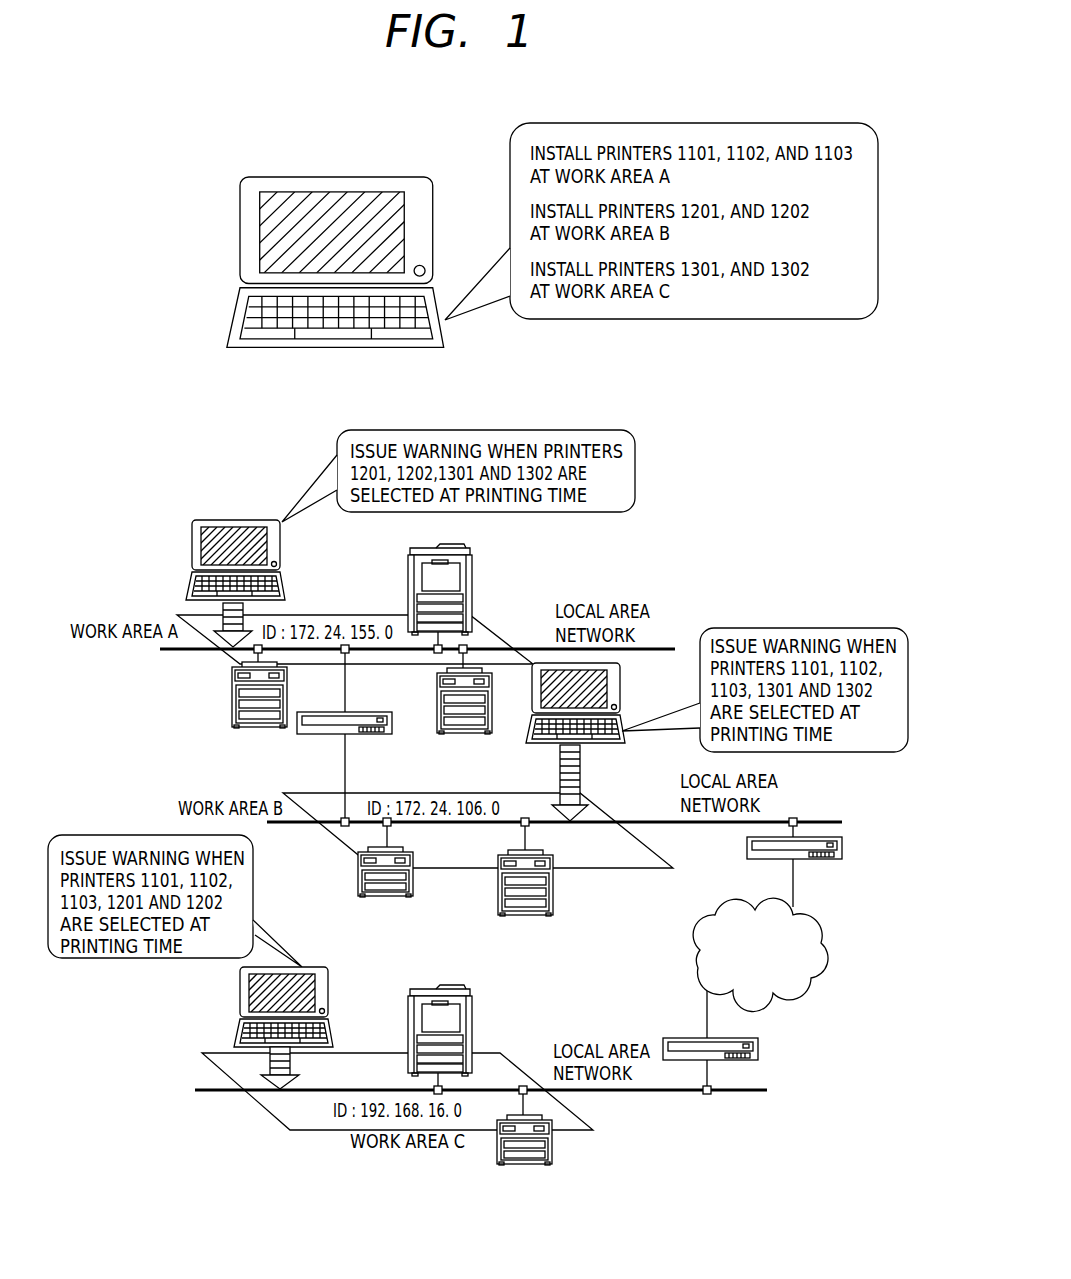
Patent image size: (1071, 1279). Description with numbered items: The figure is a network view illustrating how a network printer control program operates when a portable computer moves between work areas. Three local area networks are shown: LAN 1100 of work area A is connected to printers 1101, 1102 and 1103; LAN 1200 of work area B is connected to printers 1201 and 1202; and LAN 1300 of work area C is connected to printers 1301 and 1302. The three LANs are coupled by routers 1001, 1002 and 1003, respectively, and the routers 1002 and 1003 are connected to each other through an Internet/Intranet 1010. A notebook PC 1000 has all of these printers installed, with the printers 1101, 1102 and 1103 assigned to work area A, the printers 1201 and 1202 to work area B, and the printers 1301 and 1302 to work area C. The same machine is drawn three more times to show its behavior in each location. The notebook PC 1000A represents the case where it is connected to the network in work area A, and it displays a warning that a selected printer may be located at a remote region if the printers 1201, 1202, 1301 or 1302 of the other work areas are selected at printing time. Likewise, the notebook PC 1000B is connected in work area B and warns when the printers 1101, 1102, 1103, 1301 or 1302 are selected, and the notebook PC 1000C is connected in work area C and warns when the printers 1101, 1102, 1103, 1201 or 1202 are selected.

The notebook PC 1000 is at (350, 177).
The notebook PC 1000A is at (240, 520).
The notebook PC 1000B is at (652, 687).
The notebook PC 1000C is at (333, 970).
The router 1001 is at (325, 712).
The router 1002 is at (842, 848).
The router 1003 is at (668, 1036).
The Internet/Intranet 1010 is at (835, 947).
The LAN 1100 is at (667, 647).
The printer 1101 is at (468, 556).
The printer 1102 is at (232, 688).
The printer 1103 is at (437, 690).
The LAN 1200 is at (825, 818).
The printer 1201 is at (415, 860).
The printer 1202 is at (555, 893).
The LAN 1300 is at (680, 1095).
The printer 1301 is at (408, 1030).
The printer 1302 is at (552, 1155).